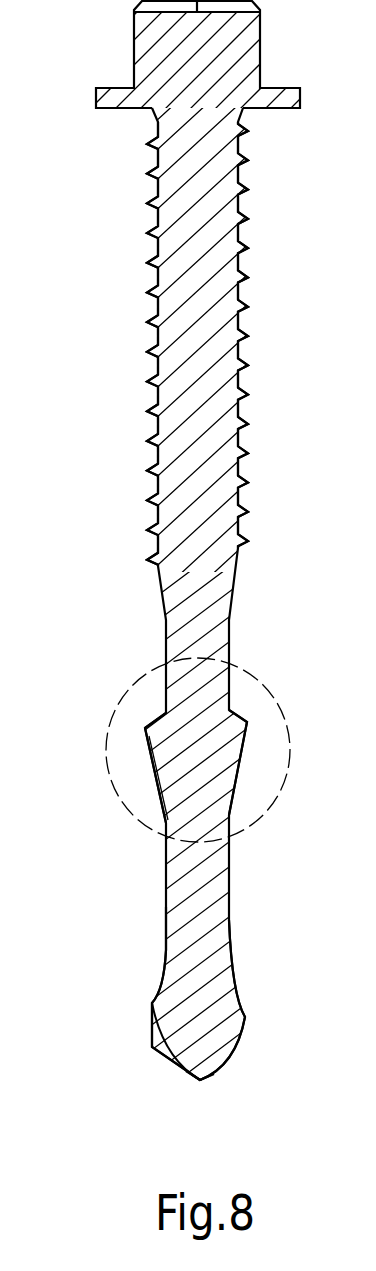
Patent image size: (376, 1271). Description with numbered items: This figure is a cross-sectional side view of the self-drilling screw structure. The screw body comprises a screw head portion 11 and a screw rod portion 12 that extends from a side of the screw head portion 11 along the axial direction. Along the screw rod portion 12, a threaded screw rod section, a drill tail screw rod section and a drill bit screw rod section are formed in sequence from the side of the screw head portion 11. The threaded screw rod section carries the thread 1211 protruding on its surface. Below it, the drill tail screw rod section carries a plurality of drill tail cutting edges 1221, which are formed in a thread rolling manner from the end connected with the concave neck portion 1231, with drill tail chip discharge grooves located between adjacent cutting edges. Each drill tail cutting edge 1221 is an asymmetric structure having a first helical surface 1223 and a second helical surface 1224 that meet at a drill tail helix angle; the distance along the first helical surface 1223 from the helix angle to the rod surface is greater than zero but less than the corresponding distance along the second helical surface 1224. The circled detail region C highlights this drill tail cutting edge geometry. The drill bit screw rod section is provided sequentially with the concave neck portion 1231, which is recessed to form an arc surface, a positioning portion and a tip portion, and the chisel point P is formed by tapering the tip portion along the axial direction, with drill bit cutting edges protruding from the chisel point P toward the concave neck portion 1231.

The screw head portion 11 is at (245, 60).
The screw rod portion 12 is at (258, 592).
The thread 1211 is at (248, 285).
The drill tail cutting edge 1221 is at (250, 725).
The first helical surface 1223 is at (158, 717).
The second helical surface 1224 is at (147, 732).
The concave neck portion 1231 is at (222, 942).
The enlarged region C is at (198, 765).
The chisel point P is at (200, 1080).